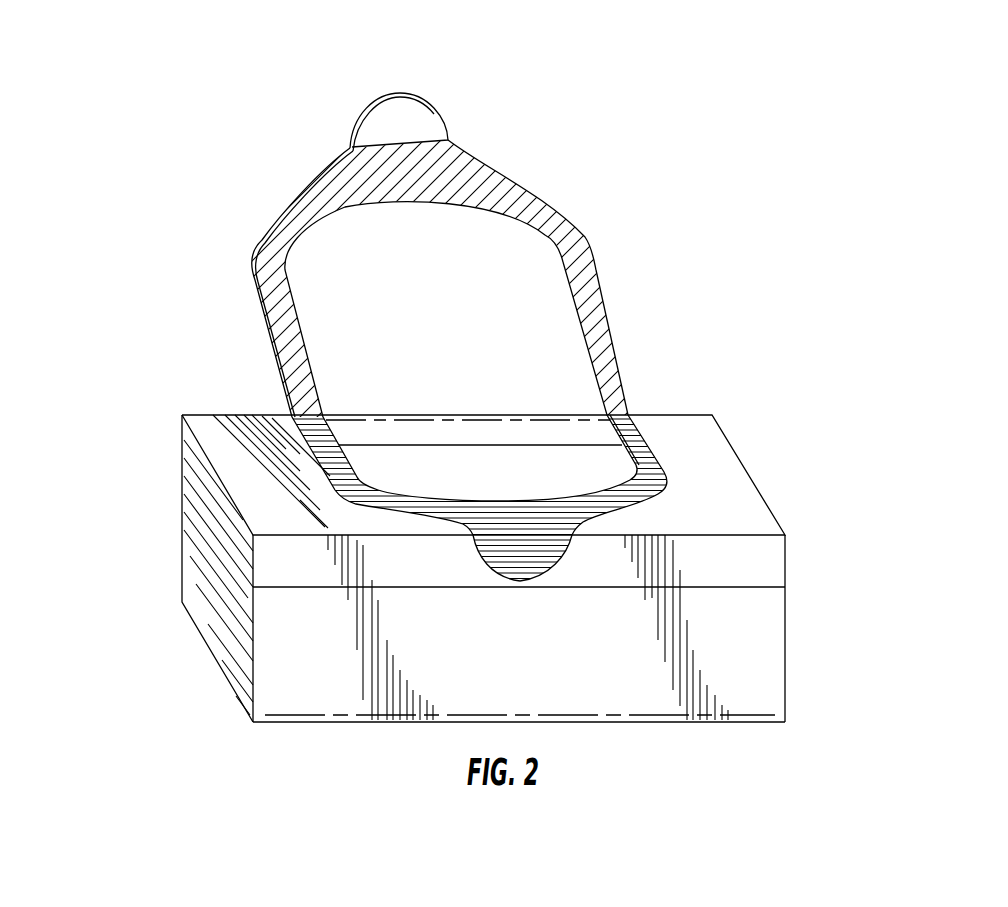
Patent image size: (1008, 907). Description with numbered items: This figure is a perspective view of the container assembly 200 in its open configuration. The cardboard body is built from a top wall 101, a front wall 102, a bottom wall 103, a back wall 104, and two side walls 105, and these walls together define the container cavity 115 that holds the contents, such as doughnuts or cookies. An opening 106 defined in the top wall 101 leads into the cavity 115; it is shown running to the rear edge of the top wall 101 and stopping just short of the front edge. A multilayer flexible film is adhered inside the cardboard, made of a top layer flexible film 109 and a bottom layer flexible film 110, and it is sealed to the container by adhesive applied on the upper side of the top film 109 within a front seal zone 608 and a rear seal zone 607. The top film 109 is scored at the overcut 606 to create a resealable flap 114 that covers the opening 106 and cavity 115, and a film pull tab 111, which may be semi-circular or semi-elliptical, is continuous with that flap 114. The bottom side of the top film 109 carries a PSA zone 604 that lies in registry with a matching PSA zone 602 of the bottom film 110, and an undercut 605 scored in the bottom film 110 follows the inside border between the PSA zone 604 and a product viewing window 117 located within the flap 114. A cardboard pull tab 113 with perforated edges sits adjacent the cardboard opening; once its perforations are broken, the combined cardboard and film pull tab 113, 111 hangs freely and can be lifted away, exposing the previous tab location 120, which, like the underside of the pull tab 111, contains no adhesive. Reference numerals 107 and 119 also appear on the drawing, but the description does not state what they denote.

The molding assembly 200 is at (698, 254).
The top layer flexible film 109 is at (598, 220).
The cardboard pull tab 113 is at (414, 84).
The film pull tab 111 is at (431, 121).
The PSA zone 604 is at (497, 172).
The bottom layer flexible film 110 is at (633, 413).
The resealable flap 114 is at (277, 166).
The overcut 606 is at (252, 266).
The product viewing window 117 is at (352, 223).
The PSA zone 602 is at (622, 440).
The container cavity 115 is at (447, 470).
The undercut 605 is at (391, 467).
The groove wall 107 is at (665, 465).
The nub left side 119 is at (498, 572).
The previous tab location 120 is at (550, 562).
The back wall 104 is at (176, 470).
The top wall 101 is at (763, 523).
The rear seal zone 607 is at (342, 428).
The opening 106 is at (403, 470).
The side walls 105 is at (193, 525).
The front wall 102 is at (770, 693).
The front seal zone 608 is at (299, 573).
The bottom wall 103 is at (772, 732).